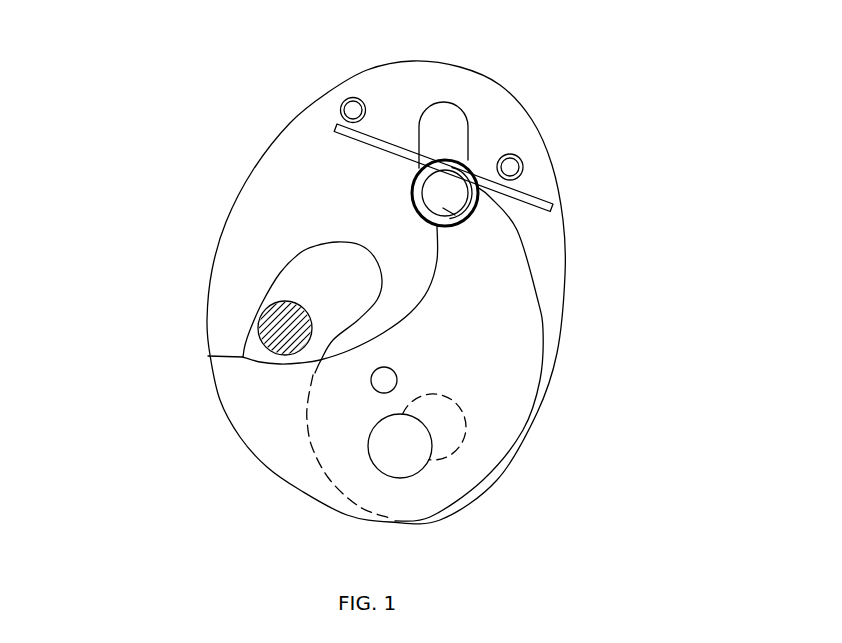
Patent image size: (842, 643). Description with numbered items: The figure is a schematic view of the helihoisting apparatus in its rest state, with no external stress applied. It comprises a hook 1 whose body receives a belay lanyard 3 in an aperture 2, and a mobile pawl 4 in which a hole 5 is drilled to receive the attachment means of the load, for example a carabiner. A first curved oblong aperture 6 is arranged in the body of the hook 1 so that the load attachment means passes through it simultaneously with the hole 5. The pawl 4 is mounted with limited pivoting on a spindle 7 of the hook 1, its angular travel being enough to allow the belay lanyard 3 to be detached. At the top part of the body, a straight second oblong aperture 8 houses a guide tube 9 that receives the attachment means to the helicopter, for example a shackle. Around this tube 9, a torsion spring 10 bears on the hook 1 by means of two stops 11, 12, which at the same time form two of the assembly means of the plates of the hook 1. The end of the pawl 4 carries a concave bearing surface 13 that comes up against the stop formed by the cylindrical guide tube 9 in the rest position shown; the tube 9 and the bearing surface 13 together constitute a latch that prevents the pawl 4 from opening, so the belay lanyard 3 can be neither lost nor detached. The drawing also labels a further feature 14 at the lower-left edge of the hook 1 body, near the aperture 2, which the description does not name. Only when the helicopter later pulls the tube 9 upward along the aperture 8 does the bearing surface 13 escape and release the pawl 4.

The hook 1 is at (270, 193).
The aperture 2 is at (330, 280).
The belay lanyard 3 is at (280, 332).
The mobile pawl 4 is at (272, 438).
The hole 5 is at (402, 452).
The first curved oblong aperture 6 is at (448, 417).
The spindle 7 is at (390, 381).
The second oblong aperture 8 is at (447, 125).
The guide tube 9 is at (468, 215).
The torsion spring 10 is at (402, 133).
The stop 11 is at (353, 108).
The stop 12 is at (513, 169).
The concave bearing surface 13 is at (452, 228).
The shoulder edge 14 is at (215, 359).